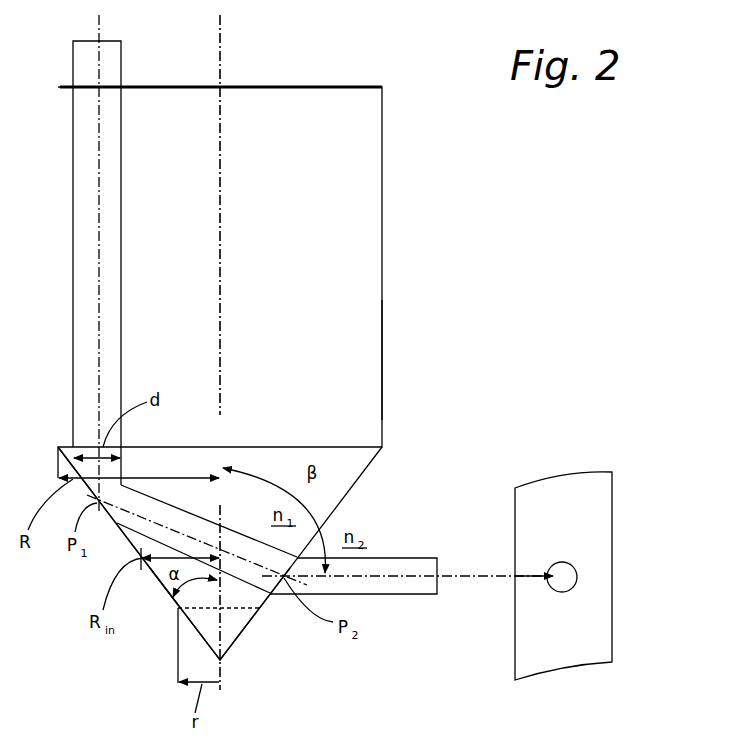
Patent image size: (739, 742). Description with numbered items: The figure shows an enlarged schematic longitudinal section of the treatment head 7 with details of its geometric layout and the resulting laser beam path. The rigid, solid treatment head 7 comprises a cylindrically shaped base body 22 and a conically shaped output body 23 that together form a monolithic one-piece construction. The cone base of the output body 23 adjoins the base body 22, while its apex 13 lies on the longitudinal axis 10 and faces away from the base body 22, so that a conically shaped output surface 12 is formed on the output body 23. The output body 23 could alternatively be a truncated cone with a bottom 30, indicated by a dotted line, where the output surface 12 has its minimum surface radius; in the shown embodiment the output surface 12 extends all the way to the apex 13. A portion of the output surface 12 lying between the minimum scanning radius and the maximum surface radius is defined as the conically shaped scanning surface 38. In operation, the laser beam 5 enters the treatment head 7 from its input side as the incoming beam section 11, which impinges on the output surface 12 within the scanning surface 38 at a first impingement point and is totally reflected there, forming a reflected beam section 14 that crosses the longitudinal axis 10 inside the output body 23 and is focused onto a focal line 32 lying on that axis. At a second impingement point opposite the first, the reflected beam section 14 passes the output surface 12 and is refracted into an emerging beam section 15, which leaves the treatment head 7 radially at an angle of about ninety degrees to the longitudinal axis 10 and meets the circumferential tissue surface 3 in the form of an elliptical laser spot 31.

The circumferential tissue surface 3 is at (556, 637).
The laser beam 5 is at (123, 53).
The treatment head 7 is at (384, 260).
The longitudinal axis 10 is at (223, 43).
The incoming beam section 11 is at (112, 218).
The conically shaped output surface 12 is at (167, 595).
The apex 13 is at (222, 662).
The reflected beam section 14 is at (155, 512).
The emerging beam section 15 is at (413, 565).
The base body 22 is at (360, 358).
The output body 23 is at (343, 483).
The bottom 30 is at (233, 609).
The elliptical laser spot 31 is at (563, 570).
The focal line 32 is at (225, 540).
The conically shaped scanning surface 38 is at (111, 519).